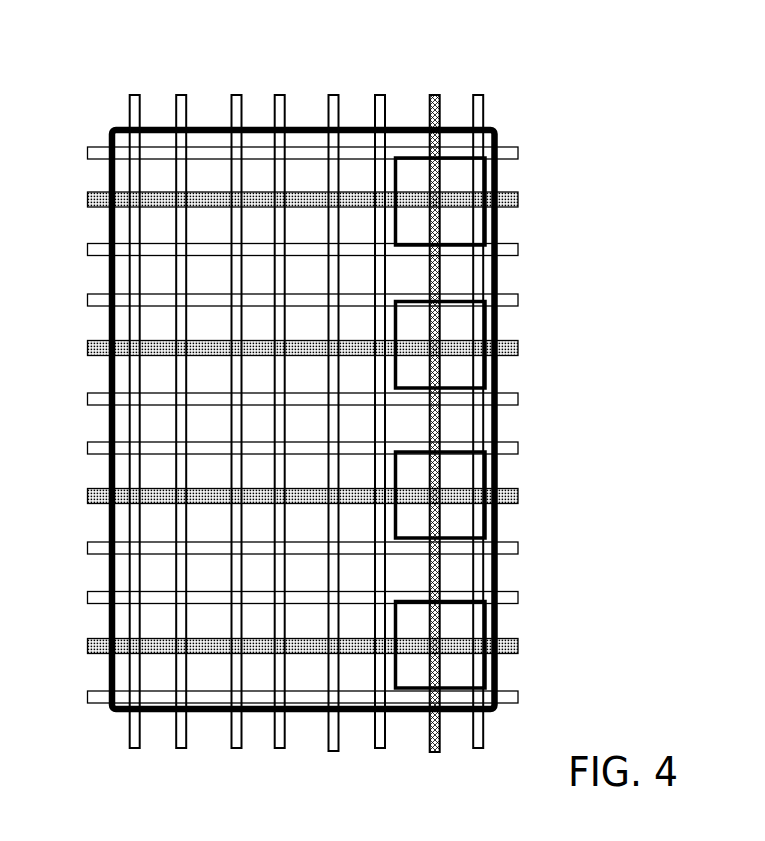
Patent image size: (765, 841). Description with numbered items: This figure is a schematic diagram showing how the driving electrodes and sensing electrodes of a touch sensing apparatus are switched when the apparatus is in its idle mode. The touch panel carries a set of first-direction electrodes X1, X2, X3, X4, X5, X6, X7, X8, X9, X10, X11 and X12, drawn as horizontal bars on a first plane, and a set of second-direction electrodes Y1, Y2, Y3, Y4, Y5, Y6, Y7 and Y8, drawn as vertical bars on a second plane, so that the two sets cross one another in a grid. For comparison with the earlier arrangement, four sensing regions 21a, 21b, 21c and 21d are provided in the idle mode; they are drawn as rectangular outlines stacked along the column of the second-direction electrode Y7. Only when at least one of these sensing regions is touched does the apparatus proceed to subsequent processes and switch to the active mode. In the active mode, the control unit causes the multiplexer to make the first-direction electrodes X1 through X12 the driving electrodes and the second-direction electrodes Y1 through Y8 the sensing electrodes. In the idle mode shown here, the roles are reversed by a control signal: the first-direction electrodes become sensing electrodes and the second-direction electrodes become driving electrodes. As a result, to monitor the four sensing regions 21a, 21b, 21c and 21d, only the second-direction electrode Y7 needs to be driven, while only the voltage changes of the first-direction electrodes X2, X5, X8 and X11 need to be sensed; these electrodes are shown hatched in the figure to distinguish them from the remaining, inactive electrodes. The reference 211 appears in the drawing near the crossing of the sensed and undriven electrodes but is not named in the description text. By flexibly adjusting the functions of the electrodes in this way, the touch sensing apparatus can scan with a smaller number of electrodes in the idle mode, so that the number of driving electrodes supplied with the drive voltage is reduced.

The sensing region 21a is at (462, 680).
The sensing region 21b is at (475, 510).
The sensing region 21c is at (475, 365).
The sensing region 21d is at (475, 215).
The memory cell 211 is at (202, 673).
The first-direction electrode X1 is at (282, 694).
The first-direction electrode X2 is at (282, 643).
The first-direction electrode X3 is at (282, 592).
The first-direction electrode X4 is at (282, 543).
The first-direction electrode X5 is at (282, 492).
The first-direction electrode X6 is at (282, 442).
The first-direction electrode X7 is at (282, 394).
The first-direction electrode X8 is at (282, 343).
The first-direction electrode X9 is at (282, 294).
The first-direction electrode X10 is at (279, 244).
The first-direction electrode X11 is at (279, 195).
The first-direction electrode X12 is at (279, 148).
The second-direction electrode Y1 is at (128, 439).
The second-direction electrode Y2 is at (186, 439).
The second-direction electrode Y3 is at (240, 439).
The second-direction electrode Y4 is at (286, 439).
The second-direction electrode Y5 is at (338, 439).
The second-direction electrode Y6 is at (388, 439).
The second-direction electrode Y7 is at (445, 439).
The second-direction electrode Y8 is at (490, 439).